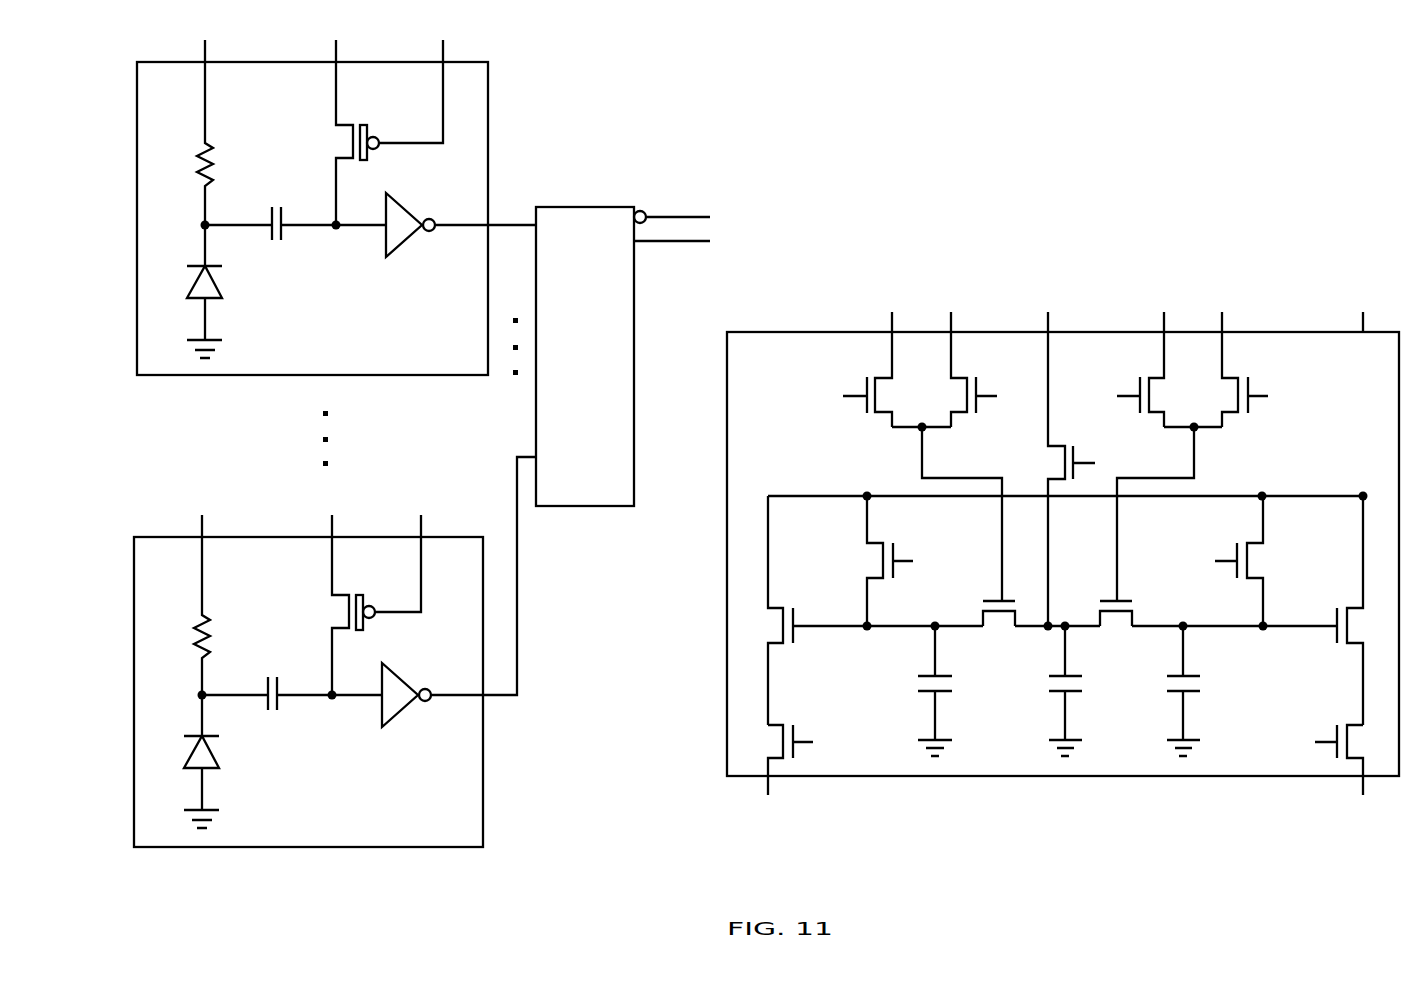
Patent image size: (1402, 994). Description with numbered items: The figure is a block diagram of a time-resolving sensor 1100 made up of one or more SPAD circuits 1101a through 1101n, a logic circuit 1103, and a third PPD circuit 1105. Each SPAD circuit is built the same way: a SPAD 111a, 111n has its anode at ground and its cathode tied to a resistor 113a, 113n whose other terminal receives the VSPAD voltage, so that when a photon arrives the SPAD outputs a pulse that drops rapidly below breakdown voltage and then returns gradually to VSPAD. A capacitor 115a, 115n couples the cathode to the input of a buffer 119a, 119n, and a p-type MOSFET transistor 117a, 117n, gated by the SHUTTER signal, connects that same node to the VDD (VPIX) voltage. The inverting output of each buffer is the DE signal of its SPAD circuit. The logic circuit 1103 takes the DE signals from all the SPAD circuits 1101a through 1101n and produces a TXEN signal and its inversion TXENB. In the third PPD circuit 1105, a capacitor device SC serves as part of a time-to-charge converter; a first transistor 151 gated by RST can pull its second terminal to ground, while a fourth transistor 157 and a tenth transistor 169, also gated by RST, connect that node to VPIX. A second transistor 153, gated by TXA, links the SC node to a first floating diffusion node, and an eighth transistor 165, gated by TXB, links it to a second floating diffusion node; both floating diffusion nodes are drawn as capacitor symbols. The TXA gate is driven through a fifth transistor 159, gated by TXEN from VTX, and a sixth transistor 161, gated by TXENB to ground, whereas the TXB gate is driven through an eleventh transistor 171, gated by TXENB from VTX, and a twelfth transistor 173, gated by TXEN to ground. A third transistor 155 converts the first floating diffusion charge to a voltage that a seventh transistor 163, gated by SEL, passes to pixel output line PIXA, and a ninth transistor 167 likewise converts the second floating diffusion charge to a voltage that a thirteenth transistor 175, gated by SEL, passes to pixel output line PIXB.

The time-resolving sensor 1100 is at (766, 457).
The SPAD circuit 1101a is at (176, 377).
The SPAD circuit 1101n is at (175, 848).
The logic circuit 1103 is at (588, 507).
The third PPD circuit 1105 is at (900, 777).
The SPAD 111a is at (229, 291).
The SPAD 111n is at (226, 761).
The resistor 113a is at (233, 143).
The resistor 113n is at (230, 616).
The capacitor 115a is at (295, 232).
The capacitor 115n is at (292, 702).
The p-type MOSFET transistor 117a is at (374, 143).
The p-type MOSFET transistor 117n is at (361, 616).
The buffer 119a is at (461, 231).
The buffer 119n is at (459, 598).
The first transistor 151 is at (1084, 479).
The second transistor 153 is at (985, 610).
The third transistor 155 is at (767, 610).
The fourth transistor 157 is at (902, 561).
The fifth transistor 159 is at (844, 379).
The sixth transistor 161 is at (986, 379).
The seventh transistor 163 is at (800, 760).
The eighth transistor 165 is at (1132, 610).
The ninth transistor 167 is at (1361, 610).
The tenth transistor 169 is at (1229, 561).
The eleventh transistor 171 is at (1269, 379).
The twelfth transistor 173 is at (1127, 379).
The thirteenth transistor 175 is at (1330, 760).